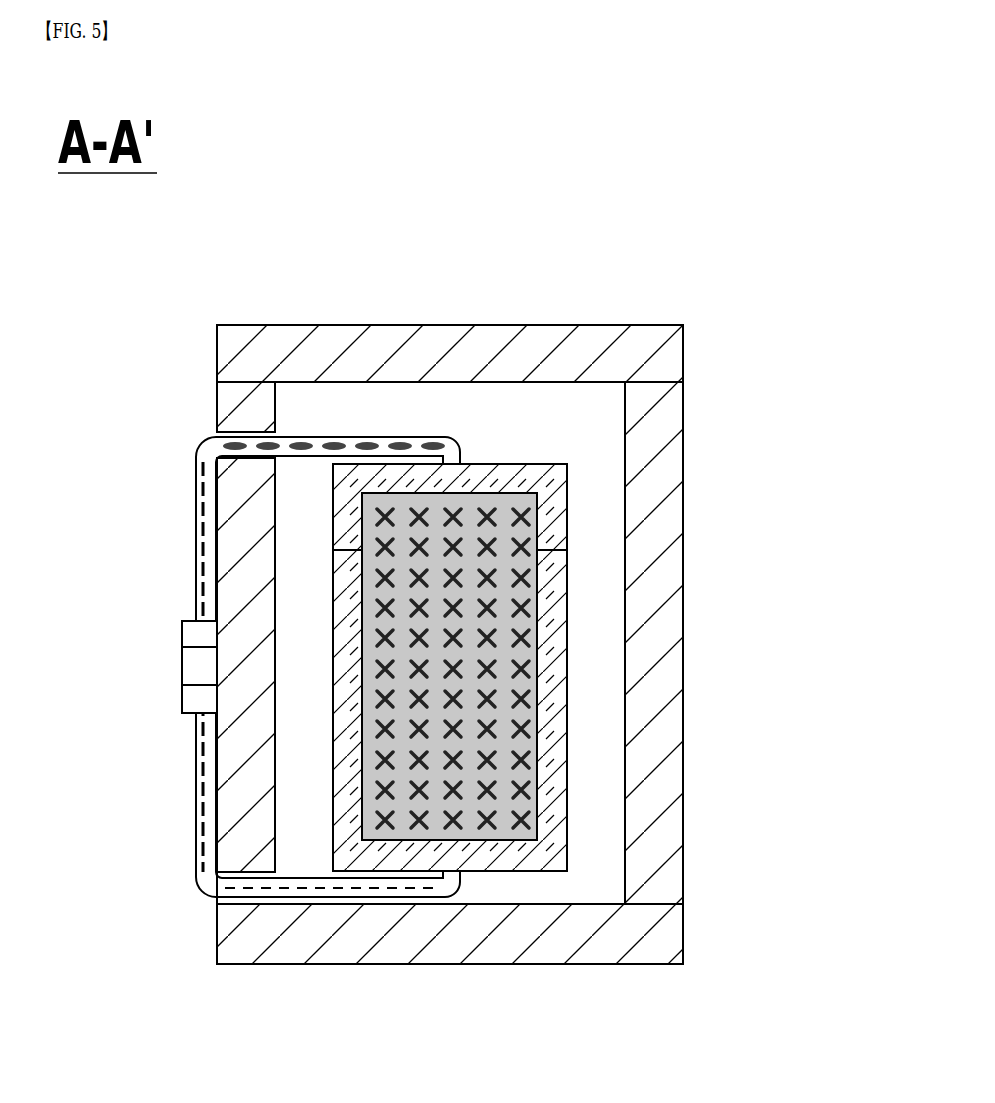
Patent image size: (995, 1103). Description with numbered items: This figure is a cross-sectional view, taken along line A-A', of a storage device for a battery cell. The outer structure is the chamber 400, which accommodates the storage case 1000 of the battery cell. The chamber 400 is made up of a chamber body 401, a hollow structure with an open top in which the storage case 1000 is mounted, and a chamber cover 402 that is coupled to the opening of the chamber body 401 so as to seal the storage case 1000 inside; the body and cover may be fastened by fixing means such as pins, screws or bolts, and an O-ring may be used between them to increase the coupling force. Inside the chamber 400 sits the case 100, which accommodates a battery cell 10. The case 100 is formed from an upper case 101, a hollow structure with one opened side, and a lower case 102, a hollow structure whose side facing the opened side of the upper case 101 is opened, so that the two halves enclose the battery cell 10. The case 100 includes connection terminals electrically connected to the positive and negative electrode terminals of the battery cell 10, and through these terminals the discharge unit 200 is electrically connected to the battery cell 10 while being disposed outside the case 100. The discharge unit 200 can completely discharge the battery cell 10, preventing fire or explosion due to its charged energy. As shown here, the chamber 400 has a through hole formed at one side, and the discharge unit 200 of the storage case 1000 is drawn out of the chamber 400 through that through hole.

The storage case 1000 is at (462, 588).
The chamber 400 is at (472, 558).
The chamber body 401 is at (673, 411).
The chamber cover 402 is at (598, 340).
The case 100 is at (595, 667).
The upper case 101 is at (555, 505).
The lower case 102 is at (555, 623).
The battery cell 10 is at (517, 748).
The discharge unit 200 is at (198, 666).